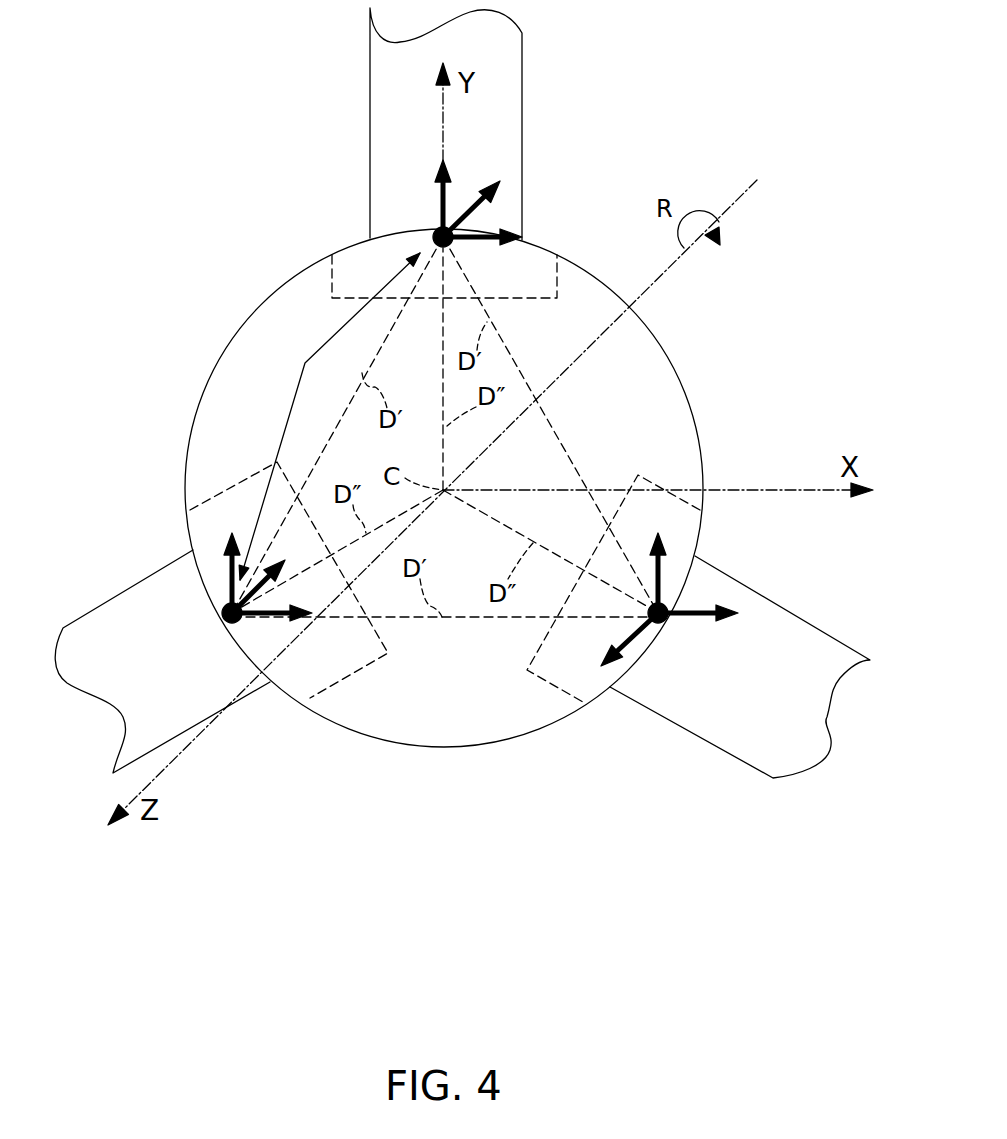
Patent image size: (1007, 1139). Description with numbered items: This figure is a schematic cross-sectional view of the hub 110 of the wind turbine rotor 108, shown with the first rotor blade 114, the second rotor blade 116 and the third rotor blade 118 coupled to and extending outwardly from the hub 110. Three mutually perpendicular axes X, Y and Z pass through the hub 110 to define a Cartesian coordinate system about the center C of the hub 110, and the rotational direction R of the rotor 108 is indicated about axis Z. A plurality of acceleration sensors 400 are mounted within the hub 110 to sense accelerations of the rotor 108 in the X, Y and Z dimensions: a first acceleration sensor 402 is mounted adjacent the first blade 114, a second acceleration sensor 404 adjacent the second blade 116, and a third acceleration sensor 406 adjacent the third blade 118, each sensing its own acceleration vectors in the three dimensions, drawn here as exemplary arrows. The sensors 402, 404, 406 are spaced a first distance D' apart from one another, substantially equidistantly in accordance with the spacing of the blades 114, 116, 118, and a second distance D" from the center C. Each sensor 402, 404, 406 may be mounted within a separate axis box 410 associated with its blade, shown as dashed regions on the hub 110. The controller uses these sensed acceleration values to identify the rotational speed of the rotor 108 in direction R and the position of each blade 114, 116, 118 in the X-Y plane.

The rotor 108 is at (364, 793).
The hub 110 is at (257, 308).
The first rotor blade 114 is at (370, 73).
The second rotor blade 116 is at (718, 750).
The third rotor blade 118 is at (130, 587).
The acceleration sensors 400 is at (305, 363).
The first acceleration sensor 402 is at (436, 231).
The second acceleration sensor 404 is at (665, 621).
The third acceleration sensor 406 is at (226, 621).
The axis box 410 is at (560, 267).